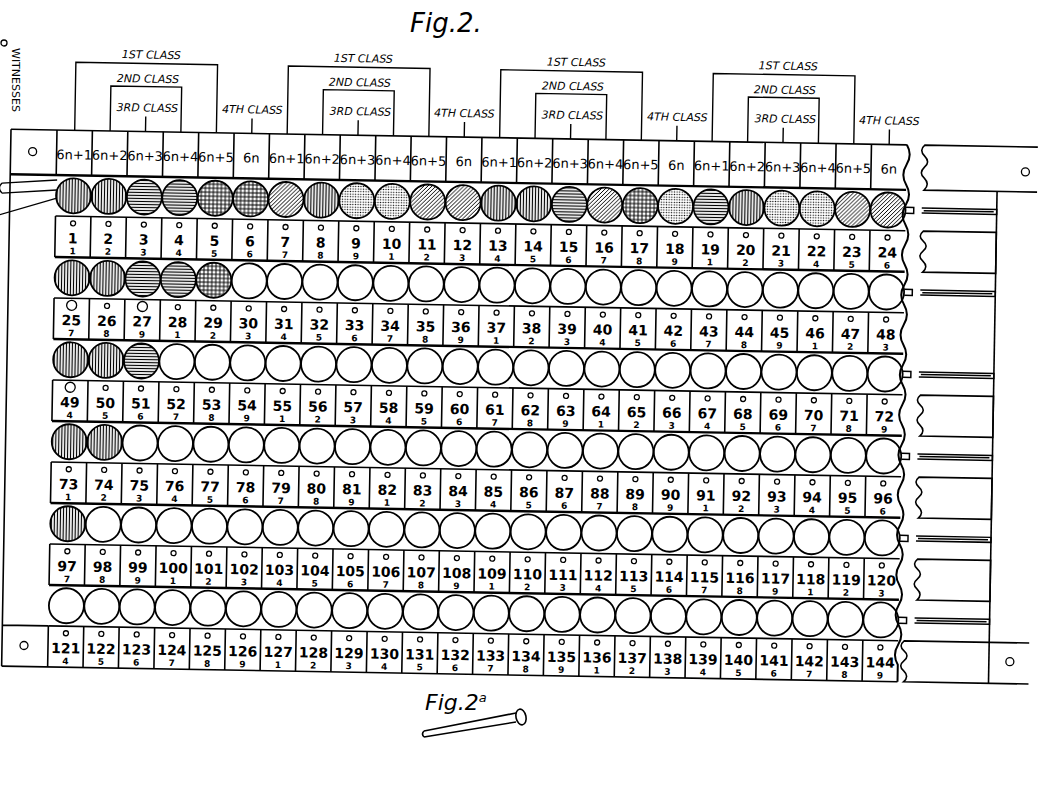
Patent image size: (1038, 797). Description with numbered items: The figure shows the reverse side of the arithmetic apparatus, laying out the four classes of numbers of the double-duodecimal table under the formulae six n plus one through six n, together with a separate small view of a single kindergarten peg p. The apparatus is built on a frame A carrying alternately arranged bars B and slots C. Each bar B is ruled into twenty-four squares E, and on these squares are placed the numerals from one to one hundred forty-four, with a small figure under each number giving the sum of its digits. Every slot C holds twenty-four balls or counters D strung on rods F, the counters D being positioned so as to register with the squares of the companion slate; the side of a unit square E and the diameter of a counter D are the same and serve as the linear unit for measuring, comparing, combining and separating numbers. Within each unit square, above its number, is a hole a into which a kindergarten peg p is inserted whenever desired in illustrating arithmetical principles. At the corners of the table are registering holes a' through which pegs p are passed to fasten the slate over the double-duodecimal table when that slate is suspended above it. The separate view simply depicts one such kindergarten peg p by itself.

In FIG. 2, the hole a is at (476, 355).
In FIG. 2, the registering holes a' is at (519, 388).
In FIG. 2, the kindergarten peg p is at (141, 309).
In FIG. 2A, the kindergarten peg p is at (476, 731).
In FIG. 2, the frame A is at (1000, 437).
In FIG. 2, the bars B is at (990, 312).
In FIG. 2, the slots C is at (990, 372).
In FIG. 2, the balls or counters D is at (885, 374).
In FIG. 2, the squares E is at (900, 318).
In FIG. 2, the rods F is at (985, 278).